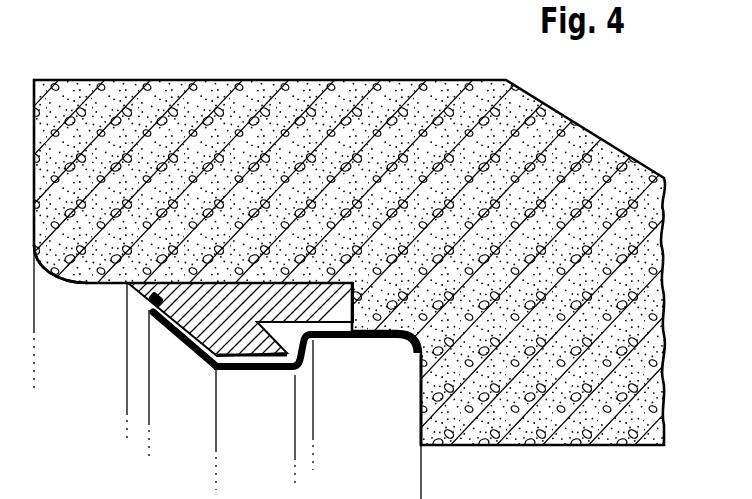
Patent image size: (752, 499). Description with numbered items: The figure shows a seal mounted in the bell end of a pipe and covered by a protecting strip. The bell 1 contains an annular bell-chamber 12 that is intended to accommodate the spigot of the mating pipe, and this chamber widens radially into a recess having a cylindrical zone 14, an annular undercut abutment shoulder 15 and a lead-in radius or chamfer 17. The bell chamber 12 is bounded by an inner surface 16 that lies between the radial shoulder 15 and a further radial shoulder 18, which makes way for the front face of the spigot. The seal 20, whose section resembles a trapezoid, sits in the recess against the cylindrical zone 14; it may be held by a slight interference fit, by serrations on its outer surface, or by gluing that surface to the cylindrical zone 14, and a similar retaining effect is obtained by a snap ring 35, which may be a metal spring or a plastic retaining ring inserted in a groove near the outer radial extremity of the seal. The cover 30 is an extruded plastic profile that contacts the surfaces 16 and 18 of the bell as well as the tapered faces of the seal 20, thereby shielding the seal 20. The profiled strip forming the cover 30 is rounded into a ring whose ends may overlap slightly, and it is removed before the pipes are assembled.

The bell 1 is at (212, 113).
The annular bell-chamber 12 is at (88, 403).
The cylindrical zone 14 is at (222, 283).
The annular undercut abutment shoulder 15 is at (345, 338).
The inner surface 16 is at (371, 338).
The lead-in radius or chamfer 17 is at (52, 270).
The radial shoulder 18 is at (419, 418).
The seal 20 is at (197, 358).
The cover 30 is at (250, 372).
The snap ring 35 is at (150, 306).